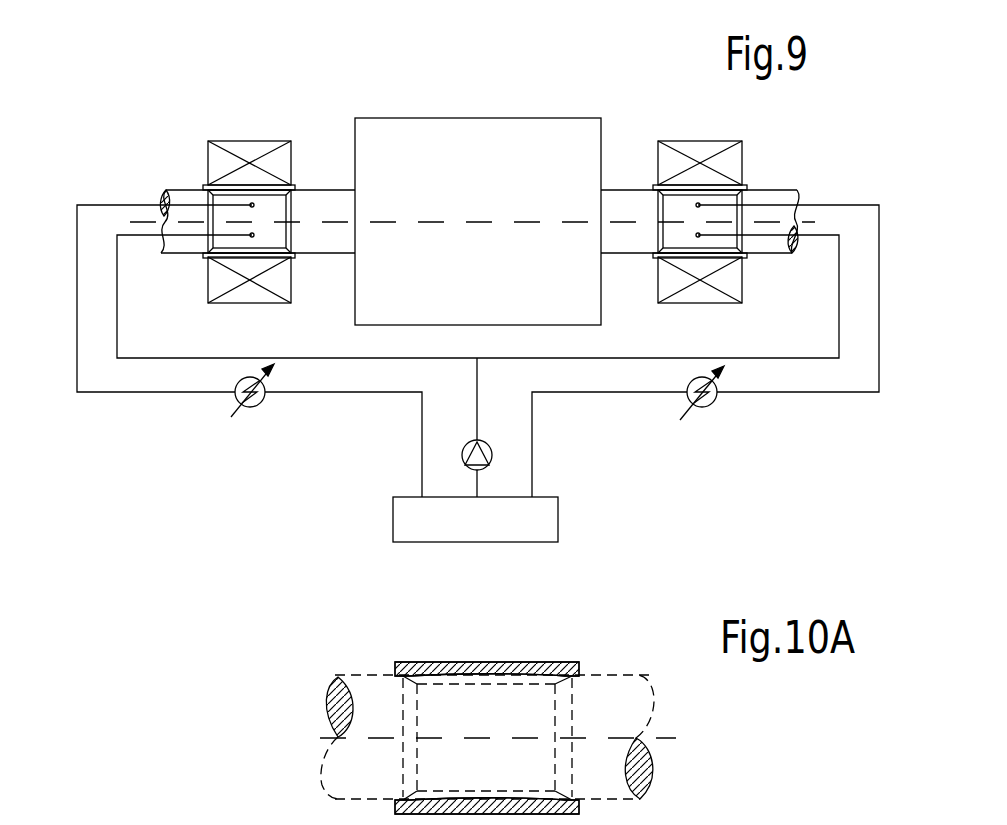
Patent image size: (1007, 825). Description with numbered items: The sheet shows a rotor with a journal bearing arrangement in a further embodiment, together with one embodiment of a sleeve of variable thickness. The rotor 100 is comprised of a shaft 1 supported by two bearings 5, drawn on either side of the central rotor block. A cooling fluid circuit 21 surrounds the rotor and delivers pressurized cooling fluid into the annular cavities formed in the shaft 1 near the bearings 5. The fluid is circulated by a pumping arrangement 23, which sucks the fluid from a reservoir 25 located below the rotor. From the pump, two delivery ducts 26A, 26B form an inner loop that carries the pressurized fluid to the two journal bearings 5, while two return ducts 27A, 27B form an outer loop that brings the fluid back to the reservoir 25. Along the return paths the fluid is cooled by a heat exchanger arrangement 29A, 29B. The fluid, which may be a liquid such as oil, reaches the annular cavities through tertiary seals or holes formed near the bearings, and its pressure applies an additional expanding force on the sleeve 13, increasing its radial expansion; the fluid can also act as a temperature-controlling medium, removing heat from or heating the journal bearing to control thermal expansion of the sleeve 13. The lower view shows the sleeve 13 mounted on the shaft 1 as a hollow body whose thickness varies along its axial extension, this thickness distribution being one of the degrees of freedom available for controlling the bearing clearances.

In FIG. 9, the shaft 1 is at (773, 200).
In FIG. 10A, the shaft 1 is at (614, 680).
In FIG. 9, the bearing 5 is at (232, 152).
In FIG. 10A, the sleeve 13 is at (405, 641).
In FIG. 9, the cooling fluid circuit 21 is at (356, 444).
In FIG. 9, the pumping arrangement 23 is at (466, 449).
In FIG. 9, the reservoir 25 is at (489, 528).
In FIG. 9, the delivery duct 26A is at (117, 332).
In FIG. 9, the delivery duct 26B is at (839, 328).
In FIG. 9, the return duct 27A is at (77, 297).
In FIG. 9, the return duct 27B is at (879, 320).
In FIG. 9, the heat exchanger arrangement 29A is at (264, 404).
In FIG. 9, the heat exchanger arrangement 29B is at (709, 405).
In FIG. 9, the rotor 100 is at (506, 108).